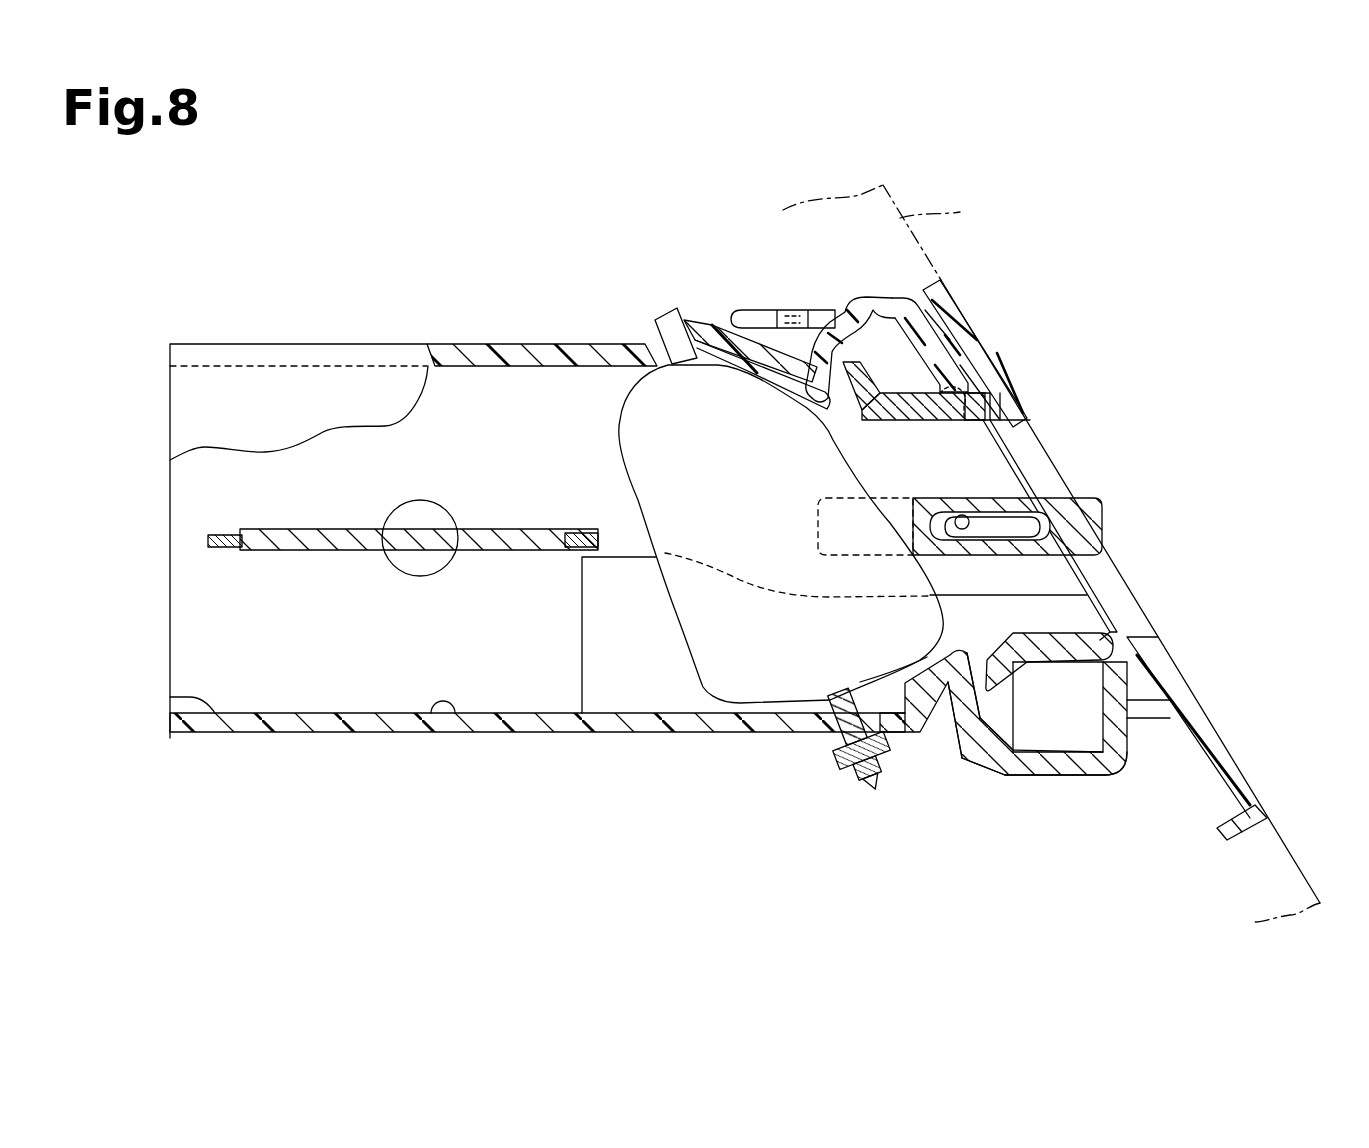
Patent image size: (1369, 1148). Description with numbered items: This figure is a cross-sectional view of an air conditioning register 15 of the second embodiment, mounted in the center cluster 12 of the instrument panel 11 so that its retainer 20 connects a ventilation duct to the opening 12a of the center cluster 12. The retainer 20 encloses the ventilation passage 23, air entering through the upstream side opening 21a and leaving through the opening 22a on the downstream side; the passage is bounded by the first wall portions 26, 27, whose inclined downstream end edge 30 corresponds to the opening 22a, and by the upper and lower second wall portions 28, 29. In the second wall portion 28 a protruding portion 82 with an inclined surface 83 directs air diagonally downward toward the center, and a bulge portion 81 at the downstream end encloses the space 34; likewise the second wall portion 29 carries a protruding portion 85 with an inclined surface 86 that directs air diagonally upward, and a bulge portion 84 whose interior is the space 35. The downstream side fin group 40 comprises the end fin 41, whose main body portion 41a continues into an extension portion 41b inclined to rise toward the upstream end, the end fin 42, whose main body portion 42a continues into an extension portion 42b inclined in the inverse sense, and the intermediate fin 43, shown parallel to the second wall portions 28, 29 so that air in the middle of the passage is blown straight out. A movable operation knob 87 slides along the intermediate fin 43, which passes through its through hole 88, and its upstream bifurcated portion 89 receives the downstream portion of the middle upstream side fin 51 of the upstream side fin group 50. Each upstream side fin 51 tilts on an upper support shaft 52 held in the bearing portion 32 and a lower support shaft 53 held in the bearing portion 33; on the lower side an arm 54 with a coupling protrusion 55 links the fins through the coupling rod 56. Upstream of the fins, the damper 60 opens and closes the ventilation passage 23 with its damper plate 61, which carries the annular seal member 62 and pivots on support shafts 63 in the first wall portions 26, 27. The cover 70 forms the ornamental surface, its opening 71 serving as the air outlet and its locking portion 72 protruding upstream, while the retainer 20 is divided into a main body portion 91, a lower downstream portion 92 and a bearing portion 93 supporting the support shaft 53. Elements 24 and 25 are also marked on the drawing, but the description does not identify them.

The instrument panel 11 is at (1051, 544).
The center cluster 12 is at (1197, 738).
The opening 12a is at (1250, 803).
The air conditioning register 15 is at (256, 322).
The retainer 20 is at (300, 738).
The upstream side opening 21a is at (172, 697).
The opening 22a is at (1146, 718).
The ventilation passage 23 is at (450, 733).
The contact surface 24 is at (960, 352).
The rounded corner 25 is at (1112, 760).
The first wall portion 26 is at (180, 405).
The first wall portion 27 is at (180, 657).
The second wall portion 28 is at (480, 344).
The second wall portion 29 is at (185, 722).
The downstream end edge 30 is at (1035, 470).
The bearing portion 32 is at (652, 324).
The bearing portion 33 is at (840, 740).
The space 34 is at (900, 303).
The space 35 is at (999, 739).
The downstream side fin group 40 is at (838, 494).
The end fin 41 is at (912, 432).
The main body portion 41a is at (923, 425).
The extension portion 41b is at (858, 418).
The end fin 42 is at (1049, 692).
The main body portion 42a is at (1052, 662).
The extension portion 42b is at (1025, 675).
The intermediate fin 43 is at (935, 560).
The upstream side fin group 50 is at (754, 539).
The upstream side fin 51 is at (636, 470).
The support shaft 52 is at (672, 316).
The support shaft 53 is at (830, 763).
The arm 54 is at (825, 766).
The coupling protrusion 55 is at (875, 770).
The coupling rod 56 is at (887, 794).
The damper 60 is at (401, 579).
The damper plate 61 is at (300, 550).
The seal member 62 is at (220, 550).
The support shaft 63 is at (400, 554).
The cover 70 is at (940, 298).
The opening 71 is at (1010, 427).
The locking portion 72 is at (980, 428).
The bulge portion 81 is at (862, 304).
The protruding portion 82 is at (708, 336).
The inclined surface 83 is at (743, 370).
The bulge portion 84 is at (1045, 775).
The protruding portion 85 is at (943, 735).
The inclined surface 86 is at (918, 660).
The movable operation knob 87 is at (1104, 527).
The through hole 88 is at (965, 512).
The bifurcated portion 89 is at (815, 528).
The main body portion 91 is at (378, 733).
The portion 92 is at (612, 733).
The bearing portion 93 is at (975, 768).